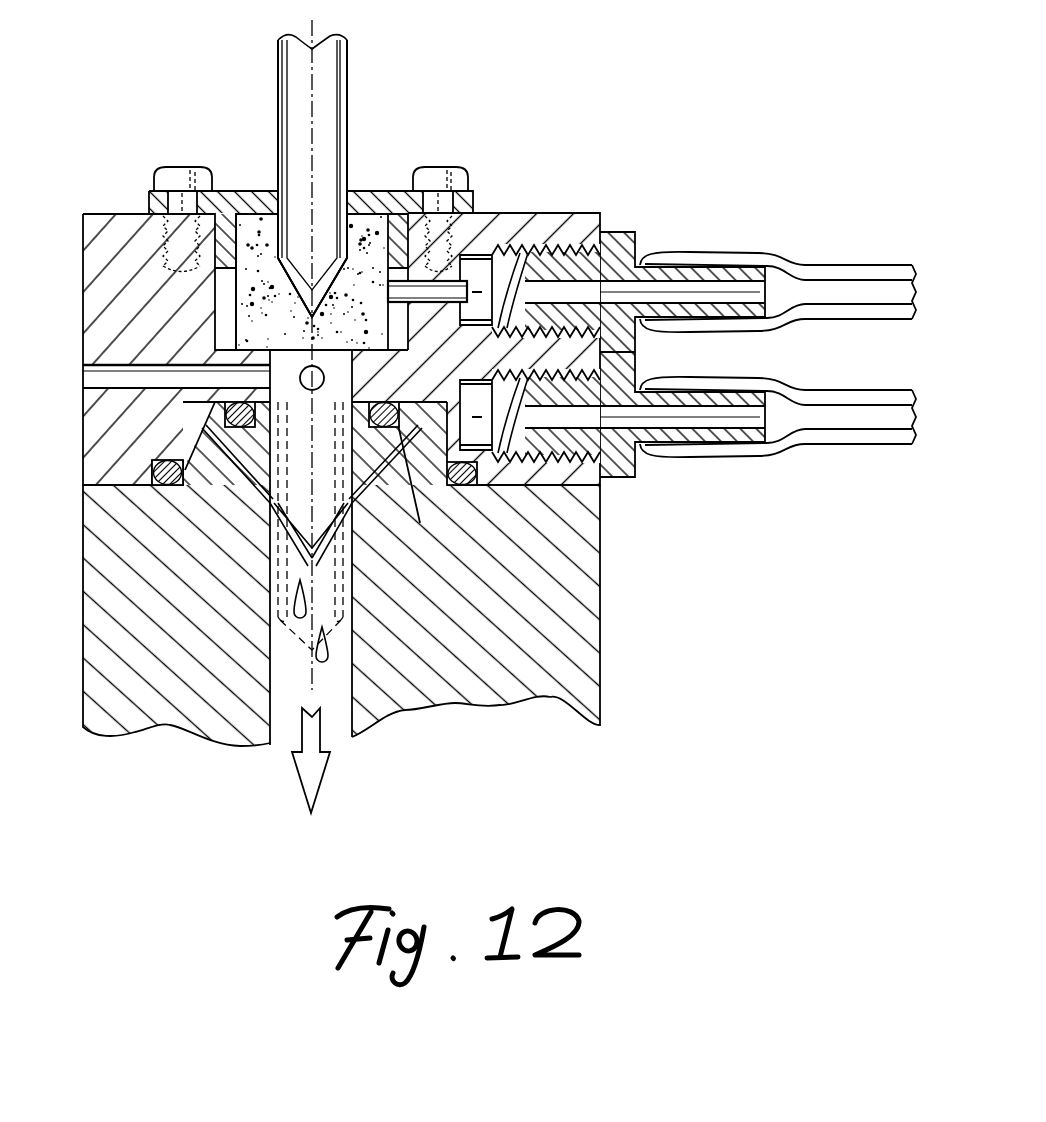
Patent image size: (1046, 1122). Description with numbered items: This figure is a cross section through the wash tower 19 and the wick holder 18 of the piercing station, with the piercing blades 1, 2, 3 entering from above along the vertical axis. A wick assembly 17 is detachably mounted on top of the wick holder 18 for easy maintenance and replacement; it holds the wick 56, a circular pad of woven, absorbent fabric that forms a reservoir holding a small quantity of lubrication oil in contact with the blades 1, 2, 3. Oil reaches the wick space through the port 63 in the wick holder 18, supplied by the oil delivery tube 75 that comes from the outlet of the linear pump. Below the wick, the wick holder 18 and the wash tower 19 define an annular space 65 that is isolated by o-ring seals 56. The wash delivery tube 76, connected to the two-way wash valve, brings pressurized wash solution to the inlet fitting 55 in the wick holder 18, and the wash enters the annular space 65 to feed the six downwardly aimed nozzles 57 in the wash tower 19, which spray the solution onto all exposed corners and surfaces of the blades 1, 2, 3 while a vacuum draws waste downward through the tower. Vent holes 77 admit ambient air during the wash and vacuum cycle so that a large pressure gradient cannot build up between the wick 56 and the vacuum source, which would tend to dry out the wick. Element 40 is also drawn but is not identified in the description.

The blade 1 is at (349, 86).
The blade 2 is at (312, 178).
The blade 3 is at (312, 178).
The wick assembly 17 is at (372, 191).
The wick holder 18 is at (83, 272).
The wash tower 19 is at (130, 740).
The pin 40 is at (452, 281).
The wash inlet fitting 55 is at (633, 480).
The wick 56 is at (260, 225).
The nozzle 57 is at (304, 387).
The port 63 is at (628, 232).
The annular space 65 is at (192, 425).
The oil delivery tube 75 is at (845, 266).
The wash delivery tube 76 is at (845, 391).
The vent hole 77 is at (83, 376).